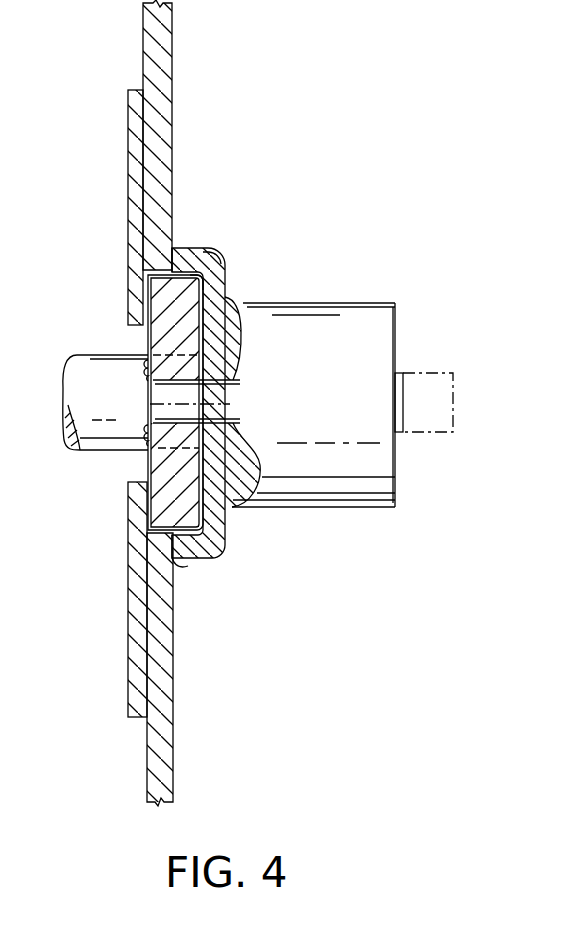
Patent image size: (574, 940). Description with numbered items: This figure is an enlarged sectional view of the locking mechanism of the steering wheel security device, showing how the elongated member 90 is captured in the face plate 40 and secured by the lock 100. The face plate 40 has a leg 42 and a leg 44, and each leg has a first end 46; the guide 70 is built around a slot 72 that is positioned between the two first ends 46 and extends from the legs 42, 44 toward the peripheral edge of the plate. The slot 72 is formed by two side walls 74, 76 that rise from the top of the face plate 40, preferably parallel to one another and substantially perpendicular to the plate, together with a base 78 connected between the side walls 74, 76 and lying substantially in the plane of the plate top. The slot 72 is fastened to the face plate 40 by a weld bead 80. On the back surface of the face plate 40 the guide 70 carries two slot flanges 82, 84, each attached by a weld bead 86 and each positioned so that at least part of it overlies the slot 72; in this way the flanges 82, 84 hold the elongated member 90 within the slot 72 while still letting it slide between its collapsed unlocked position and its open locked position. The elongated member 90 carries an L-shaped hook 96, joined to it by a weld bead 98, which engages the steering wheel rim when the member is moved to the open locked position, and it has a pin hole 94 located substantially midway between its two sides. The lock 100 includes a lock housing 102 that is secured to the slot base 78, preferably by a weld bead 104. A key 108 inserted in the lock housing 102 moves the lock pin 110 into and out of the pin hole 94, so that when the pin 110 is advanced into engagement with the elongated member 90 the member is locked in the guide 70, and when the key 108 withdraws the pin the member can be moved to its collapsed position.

The face plate 40 is at (201, 403).
The leg 42 is at (173, 700).
The leg 44 is at (172, 85).
The first end 46 is at (148, 277).
The guide 70 is at (169, 382).
The slot 72 is at (202, 325).
The side wall 74 is at (192, 248).
The side wall 76 is at (195, 560).
The base 78 is at (227, 528).
The weld bead 80 is at (173, 247).
The slot flange 82 is at (133, 608).
The slot flange 84 is at (133, 208).
The weld bead 86 is at (105, 403).
The elongated member 90 is at (200, 285).
The pin hole 94 is at (142, 413).
The hook 96 is at (82, 396).
The weld bead 98 is at (145, 370).
The lock 100 is at (339, 411).
The lock housing 102 is at (348, 302).
The weld bead 104 is at (235, 296).
The key 108 is at (12, 72).
The lock pin 110 is at (232, 397).